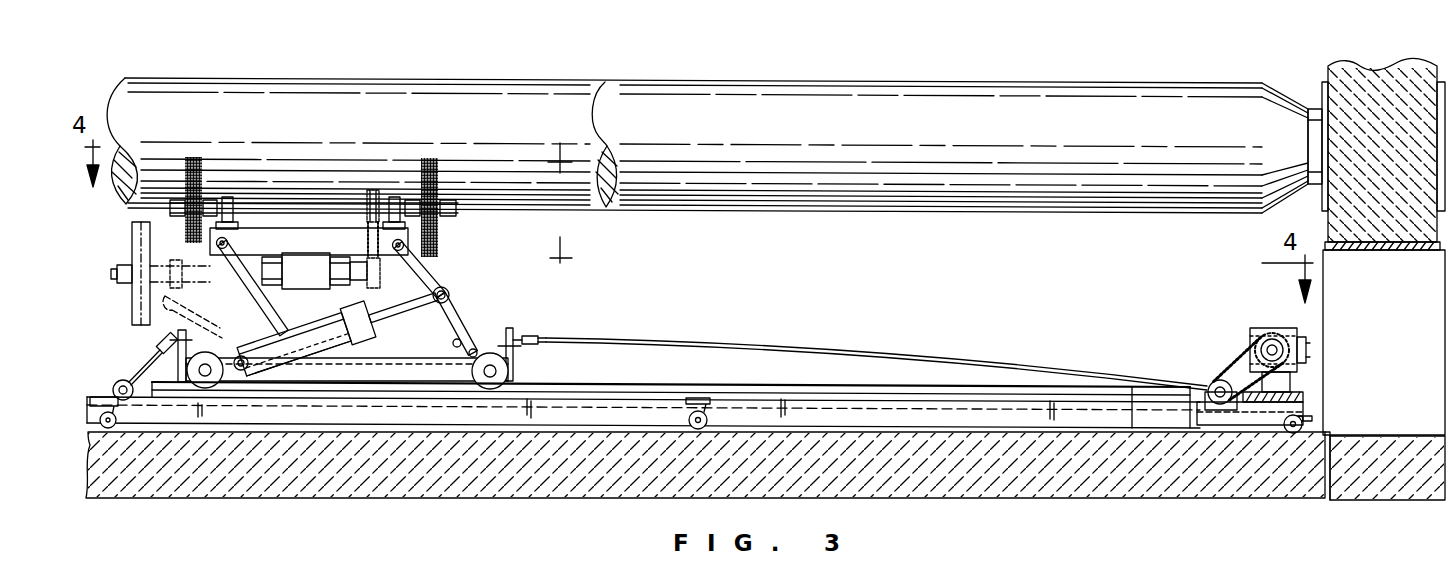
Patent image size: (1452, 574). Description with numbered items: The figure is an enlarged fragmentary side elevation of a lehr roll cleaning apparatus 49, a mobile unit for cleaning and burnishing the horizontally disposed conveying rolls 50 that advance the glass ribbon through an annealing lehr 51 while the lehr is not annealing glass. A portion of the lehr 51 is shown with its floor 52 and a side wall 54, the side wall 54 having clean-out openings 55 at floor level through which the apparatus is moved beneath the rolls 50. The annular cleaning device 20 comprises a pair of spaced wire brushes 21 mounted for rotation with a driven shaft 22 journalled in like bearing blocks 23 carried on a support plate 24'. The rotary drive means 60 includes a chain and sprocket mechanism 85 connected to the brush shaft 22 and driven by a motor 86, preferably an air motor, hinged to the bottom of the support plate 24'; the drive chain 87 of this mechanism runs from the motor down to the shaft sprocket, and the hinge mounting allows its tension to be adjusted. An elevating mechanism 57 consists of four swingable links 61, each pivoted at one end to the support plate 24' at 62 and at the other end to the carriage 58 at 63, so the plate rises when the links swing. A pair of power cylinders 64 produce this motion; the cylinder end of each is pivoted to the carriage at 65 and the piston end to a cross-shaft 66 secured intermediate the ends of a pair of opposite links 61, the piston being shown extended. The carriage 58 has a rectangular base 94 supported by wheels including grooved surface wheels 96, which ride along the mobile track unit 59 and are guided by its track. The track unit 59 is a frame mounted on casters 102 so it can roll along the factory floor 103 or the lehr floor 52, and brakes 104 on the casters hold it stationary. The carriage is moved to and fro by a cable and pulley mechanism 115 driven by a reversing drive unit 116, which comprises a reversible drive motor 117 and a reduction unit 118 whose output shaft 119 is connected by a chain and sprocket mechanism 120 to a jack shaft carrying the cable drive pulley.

The annular cleaning device 20 is at (452, 141).
The wire brushes 21 is at (195, 157).
The driven shaft 22 is at (255, 204).
The bearing blocks 23 is at (228, 197).
The support plate 24' is at (309, 188).
The roll cleaning apparatus 49 is at (490, 300).
The conveying rolls 50 is at (563, 90).
The annealing lehr 51 is at (1318, 66).
The lehr floor 52 is at (244, 490).
The side wall 54 is at (1372, 78).
The clean-out openings 55 is at (1396, 250).
The elevating mechanism 57 is at (436, 276).
The carriage 58 is at (506, 342).
The mobile track unit 59 is at (950, 380).
The rotary drive means 60 is at (352, 303).
The swingable links 61 is at (236, 266).
The pivotal connection 62 is at (230, 243).
The pivotal connection 63 is at (476, 350).
The power cylinders 64 is at (350, 350).
The pivotal connection 65 is at (238, 360).
The cross-shaft 66 is at (448, 290).
The chain and sprocket mechanism 85 is at (360, 188).
The motor 86 is at (314, 271).
The chain 87 is at (372, 262).
The base 94 is at (428, 368).
The grooved surface wheels 96 is at (198, 368).
The casters 102 is at (112, 428).
The factory floor 103 is at (1443, 430).
The brakes 104 is at (120, 388).
The cable and pulley mechanism 115 is at (795, 340).
The reversing drive unit 116 is at (1250, 318).
The reversible drive motor 117 is at (1306, 350).
The reduction unit 118 is at (1256, 336).
The output shaft 119 is at (1288, 344).
The chain and sprocket mechanism 120 is at (1214, 362).